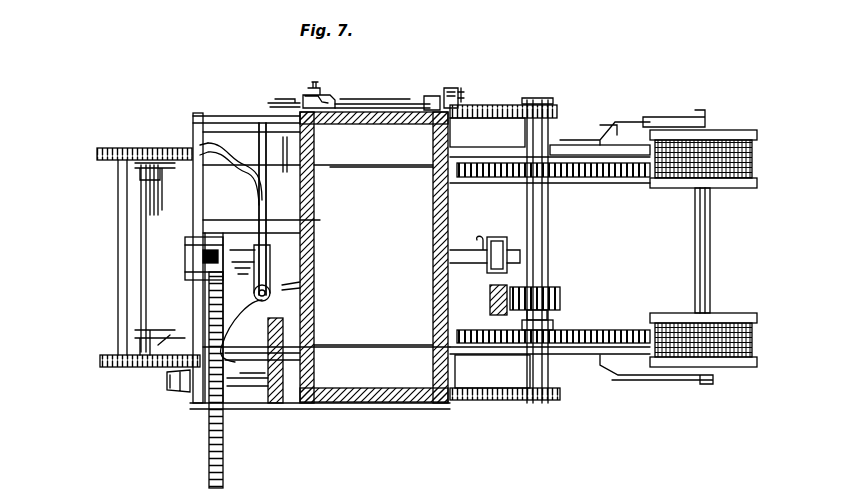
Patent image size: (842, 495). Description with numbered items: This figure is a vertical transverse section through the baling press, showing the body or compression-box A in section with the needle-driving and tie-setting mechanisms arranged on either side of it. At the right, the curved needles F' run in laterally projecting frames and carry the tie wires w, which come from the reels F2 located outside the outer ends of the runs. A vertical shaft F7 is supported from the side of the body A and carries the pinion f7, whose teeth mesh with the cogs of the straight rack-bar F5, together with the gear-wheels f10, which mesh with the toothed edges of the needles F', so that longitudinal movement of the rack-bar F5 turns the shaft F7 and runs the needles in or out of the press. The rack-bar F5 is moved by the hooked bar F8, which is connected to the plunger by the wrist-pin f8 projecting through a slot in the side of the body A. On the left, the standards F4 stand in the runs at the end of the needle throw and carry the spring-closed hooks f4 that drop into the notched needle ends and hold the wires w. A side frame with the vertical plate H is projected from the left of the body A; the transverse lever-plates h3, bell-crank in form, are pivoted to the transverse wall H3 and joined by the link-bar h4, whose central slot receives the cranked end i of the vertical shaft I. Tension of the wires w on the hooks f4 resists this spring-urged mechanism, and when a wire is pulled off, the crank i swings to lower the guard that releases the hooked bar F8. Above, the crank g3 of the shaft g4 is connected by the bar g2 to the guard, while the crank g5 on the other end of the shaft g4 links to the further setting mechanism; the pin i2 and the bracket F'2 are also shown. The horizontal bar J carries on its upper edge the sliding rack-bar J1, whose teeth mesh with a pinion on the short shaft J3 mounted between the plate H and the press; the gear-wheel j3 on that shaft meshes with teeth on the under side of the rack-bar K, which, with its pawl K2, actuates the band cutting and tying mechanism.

The body or compression-box A is at (372, 380).
The wires w is at (364, 165).
The bar g2 is at (465, 95).
The crank g3 is at (438, 96).
The shaft g4 is at (388, 104).
The crank g5 is at (332, 97).
The pin i2 is at (272, 103).
The standards F4 is at (127, 222).
The curved needles F' is at (346, 252).
The spring-closed hooks f4 is at (158, 345).
The rack-bar K is at (185, 250).
The pawl K2 is at (187, 265).
The vertical wall or plate H is at (200, 298).
The gear-wheel j3 is at (209, 446).
The vertical shaft I is at (258, 139).
The transverse levers or lever-plates h3 is at (231, 252).
The link-bar h4 is at (242, 256).
The cranked end i is at (271, 268).
The transverse wall H3 is at (312, 275).
The sliding rack-bar J1 is at (285, 325).
The short shaft J3 is at (255, 392).
The horizontal bar J is at (282, 403).
The shaft F7 is at (551, 241).
The gear-wheels f10 is at (603, 330).
The bracket F'2 is at (631, 247).
The reels F2 is at (722, 130).
The hooked bar F8 is at (497, 237).
The wrist-pin f8 is at (462, 250).
The rack-bar F5 is at (490, 302).
The pinion f7 is at (560, 294).